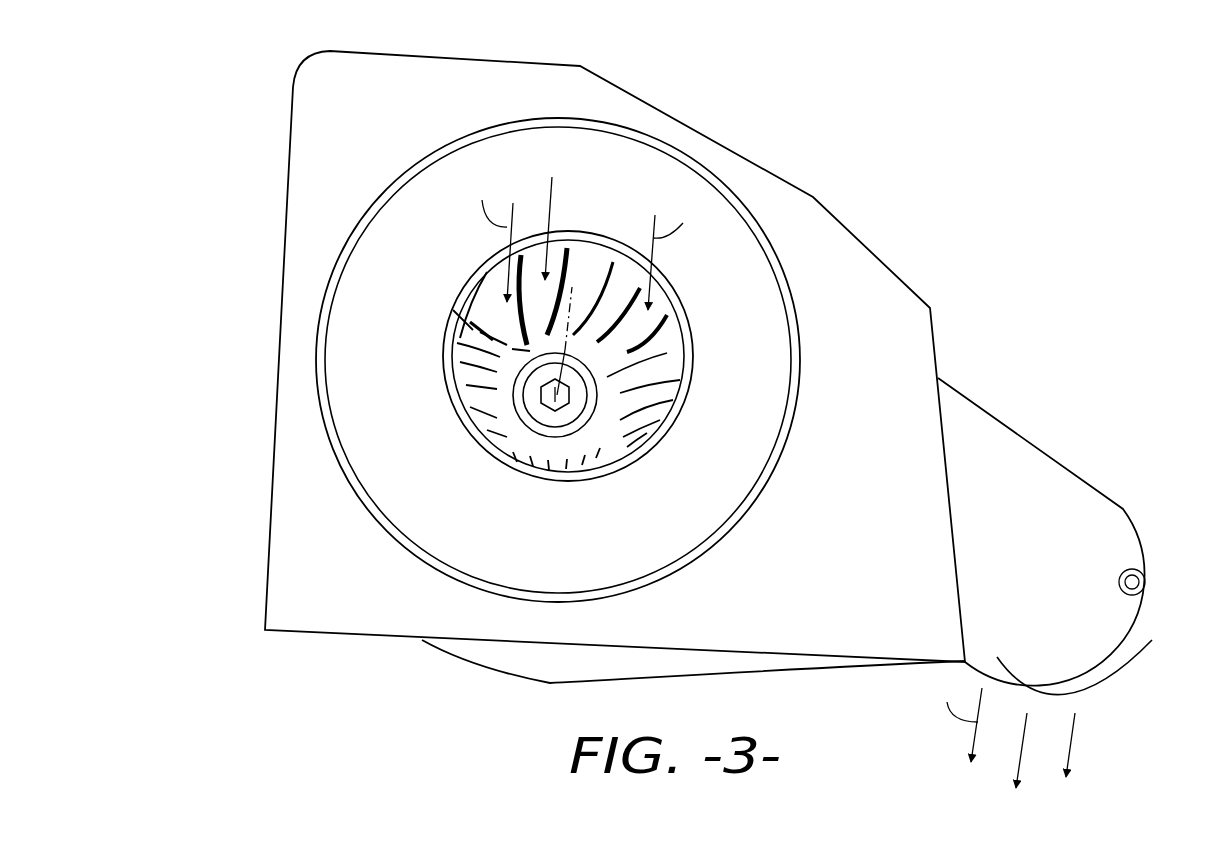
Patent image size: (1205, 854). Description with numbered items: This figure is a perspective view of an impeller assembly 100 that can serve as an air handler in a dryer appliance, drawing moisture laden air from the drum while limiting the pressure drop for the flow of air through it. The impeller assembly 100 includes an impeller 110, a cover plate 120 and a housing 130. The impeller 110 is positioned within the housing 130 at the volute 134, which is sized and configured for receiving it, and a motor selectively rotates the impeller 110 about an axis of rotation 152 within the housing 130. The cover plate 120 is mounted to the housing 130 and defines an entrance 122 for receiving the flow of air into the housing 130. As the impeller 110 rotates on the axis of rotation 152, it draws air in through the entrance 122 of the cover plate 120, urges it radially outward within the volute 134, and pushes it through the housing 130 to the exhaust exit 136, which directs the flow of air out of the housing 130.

The impeller assembly 100 is at (247, 158).
The impeller 110 is at (585, 257).
The cover plate 120 is at (848, 257).
The entrance 122 is at (447, 398).
The housing 130 is at (1110, 527).
The volute 134 is at (683, 374).
The exhaust exit 136 is at (1100, 705).
The axis of rotation 152 is at (463, 312).